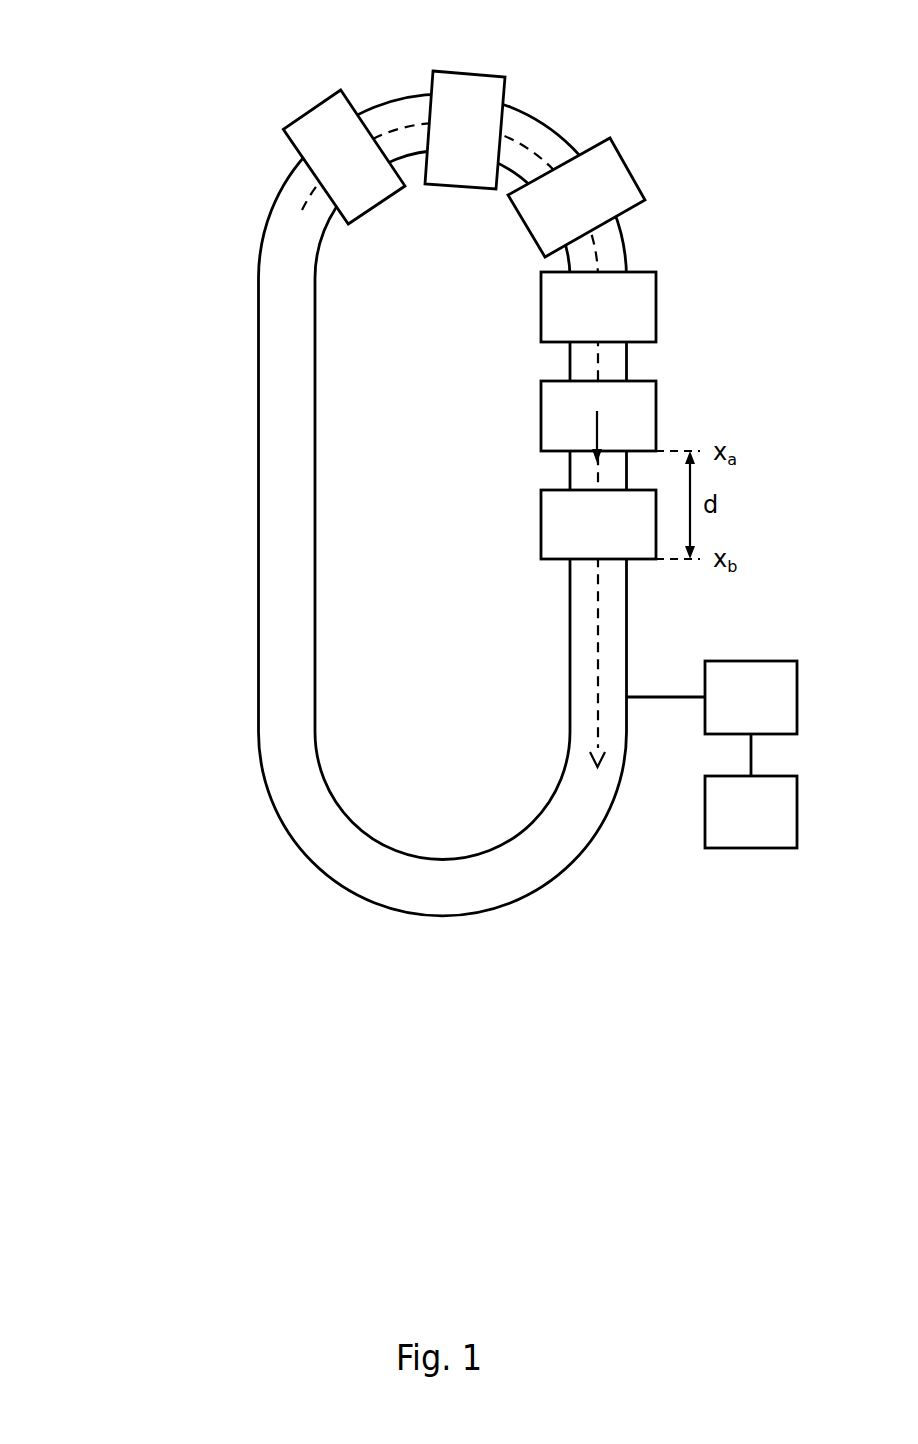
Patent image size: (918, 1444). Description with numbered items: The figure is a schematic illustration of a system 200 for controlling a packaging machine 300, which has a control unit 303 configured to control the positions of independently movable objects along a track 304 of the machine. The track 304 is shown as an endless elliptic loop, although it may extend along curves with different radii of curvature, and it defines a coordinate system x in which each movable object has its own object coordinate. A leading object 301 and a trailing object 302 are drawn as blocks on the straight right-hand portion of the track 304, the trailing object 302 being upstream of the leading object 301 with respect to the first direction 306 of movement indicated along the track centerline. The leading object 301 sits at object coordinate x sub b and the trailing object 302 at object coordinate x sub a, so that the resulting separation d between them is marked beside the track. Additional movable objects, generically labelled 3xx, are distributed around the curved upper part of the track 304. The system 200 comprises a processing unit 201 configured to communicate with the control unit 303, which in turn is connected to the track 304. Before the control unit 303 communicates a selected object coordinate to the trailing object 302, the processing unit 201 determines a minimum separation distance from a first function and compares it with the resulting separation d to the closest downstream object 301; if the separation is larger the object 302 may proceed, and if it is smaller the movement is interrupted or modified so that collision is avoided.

The packaging machine 300 is at (152, 38).
The system for controlling a packaging machine 200 is at (676, 910).
The trailing object 302 is at (542, 403).
The leading object 301 is at (542, 512).
The station / position on track 3xx is at (597, 439).
The track 304 is at (595, 655).
The first direction 306 is at (545, 724).
The control unit 303 is at (712, 697).
The processing unit 201 is at (751, 791).